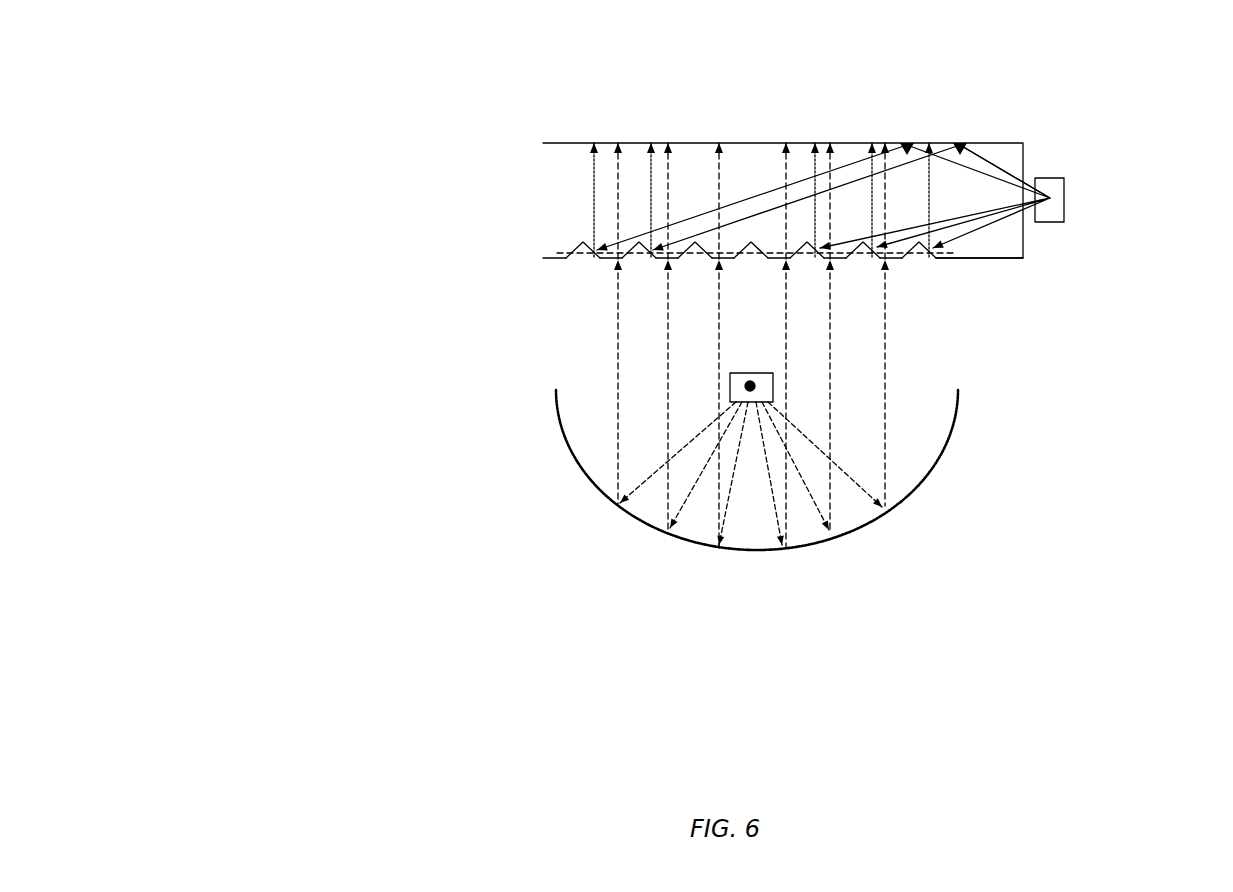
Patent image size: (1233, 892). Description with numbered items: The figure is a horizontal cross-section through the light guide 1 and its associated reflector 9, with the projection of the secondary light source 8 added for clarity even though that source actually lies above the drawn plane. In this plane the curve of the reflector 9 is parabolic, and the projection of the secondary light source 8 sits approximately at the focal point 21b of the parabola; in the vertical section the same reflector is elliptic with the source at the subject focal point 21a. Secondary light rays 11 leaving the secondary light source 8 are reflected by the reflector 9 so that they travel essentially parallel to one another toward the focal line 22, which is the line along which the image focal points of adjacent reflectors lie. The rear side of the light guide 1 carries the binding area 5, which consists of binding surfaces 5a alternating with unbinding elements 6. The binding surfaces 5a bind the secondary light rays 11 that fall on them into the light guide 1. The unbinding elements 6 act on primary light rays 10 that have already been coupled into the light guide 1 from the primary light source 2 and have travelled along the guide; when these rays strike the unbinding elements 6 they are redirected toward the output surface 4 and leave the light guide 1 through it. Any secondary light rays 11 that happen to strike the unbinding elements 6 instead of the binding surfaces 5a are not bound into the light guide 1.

The light guide 1 is at (700, 140).
The primary light source 2 is at (1067, 199).
The output surface 4 is at (988, 155).
The binding area 5 is at (458, 347).
The binding surfaces 5a is at (612, 261).
The unbinding elements 6 is at (585, 236).
The secondary light source 8 is at (730, 386).
The reflector 9 is at (778, 552).
The primary light rays 10 is at (908, 140).
The secondary light rays 11 is at (618, 340).
The subject focal point 21a is at (773, 387).
The focal point of the parabola 21b is at (751, 473).
The focal line 22 is at (563, 246).